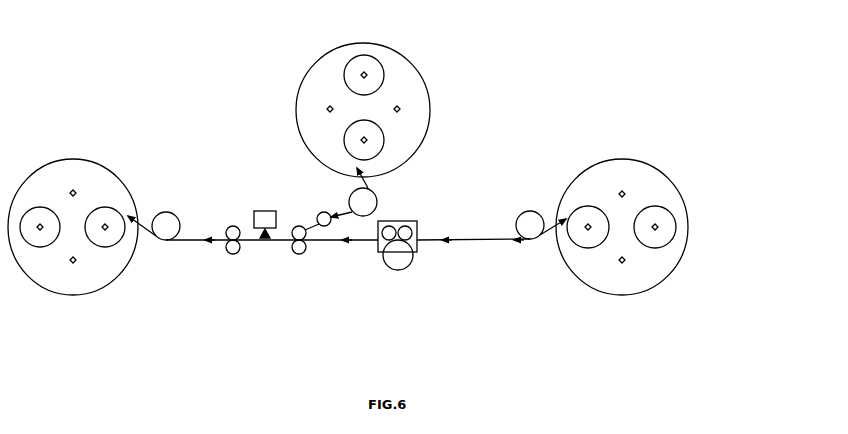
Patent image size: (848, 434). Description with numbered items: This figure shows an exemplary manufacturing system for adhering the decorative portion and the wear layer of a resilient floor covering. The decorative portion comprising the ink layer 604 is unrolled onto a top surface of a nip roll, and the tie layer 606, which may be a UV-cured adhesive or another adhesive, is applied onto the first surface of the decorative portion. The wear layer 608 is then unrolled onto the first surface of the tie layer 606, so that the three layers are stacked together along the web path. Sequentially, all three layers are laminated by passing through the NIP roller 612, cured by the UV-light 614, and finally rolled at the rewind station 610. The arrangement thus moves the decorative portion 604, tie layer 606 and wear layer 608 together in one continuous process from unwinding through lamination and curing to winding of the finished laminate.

The decorative portion comprising the ink layer 604 is at (678, 192).
The tie layer 606 is at (402, 223).
The wear layer 608 is at (423, 75).
The rewind station 610 is at (133, 193).
The NIP roller 612 is at (235, 257).
The UV-light 614 is at (298, 180).